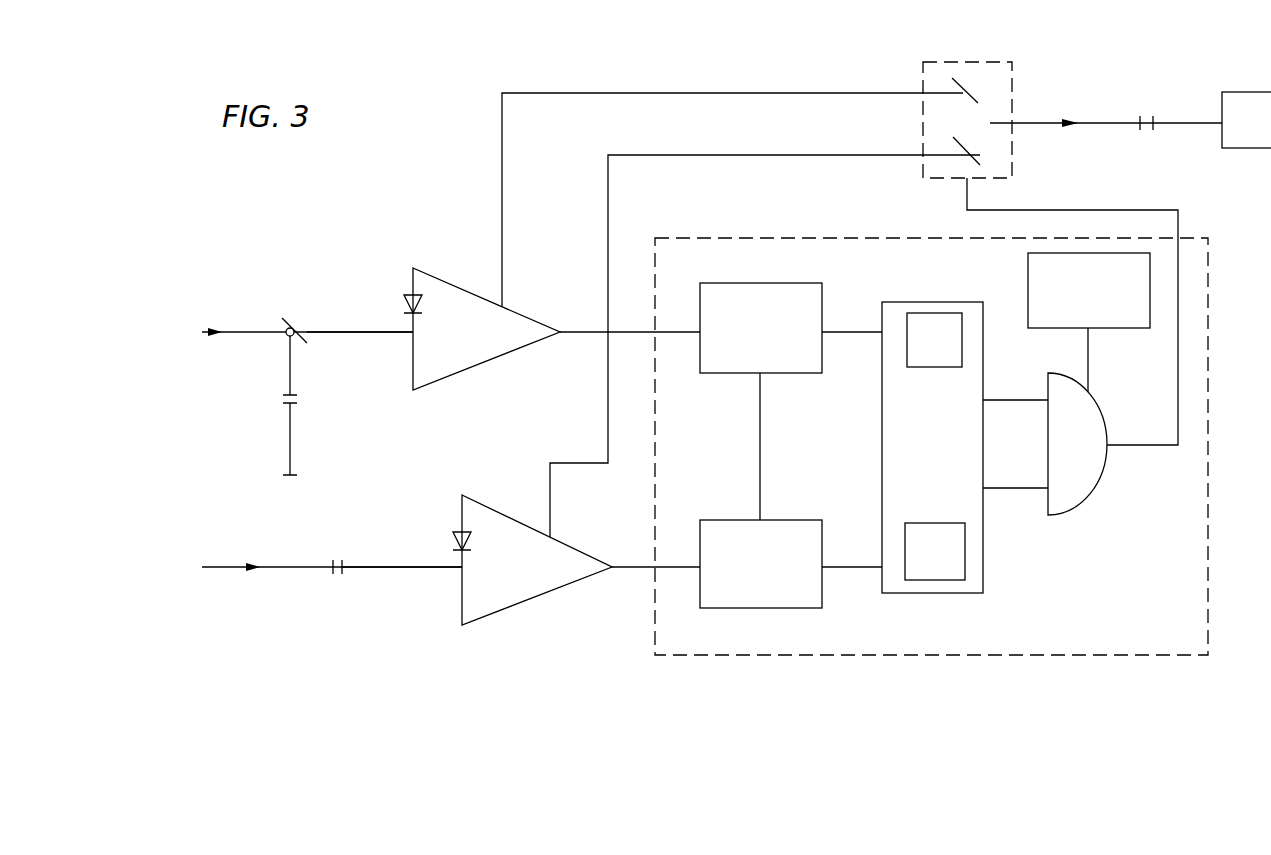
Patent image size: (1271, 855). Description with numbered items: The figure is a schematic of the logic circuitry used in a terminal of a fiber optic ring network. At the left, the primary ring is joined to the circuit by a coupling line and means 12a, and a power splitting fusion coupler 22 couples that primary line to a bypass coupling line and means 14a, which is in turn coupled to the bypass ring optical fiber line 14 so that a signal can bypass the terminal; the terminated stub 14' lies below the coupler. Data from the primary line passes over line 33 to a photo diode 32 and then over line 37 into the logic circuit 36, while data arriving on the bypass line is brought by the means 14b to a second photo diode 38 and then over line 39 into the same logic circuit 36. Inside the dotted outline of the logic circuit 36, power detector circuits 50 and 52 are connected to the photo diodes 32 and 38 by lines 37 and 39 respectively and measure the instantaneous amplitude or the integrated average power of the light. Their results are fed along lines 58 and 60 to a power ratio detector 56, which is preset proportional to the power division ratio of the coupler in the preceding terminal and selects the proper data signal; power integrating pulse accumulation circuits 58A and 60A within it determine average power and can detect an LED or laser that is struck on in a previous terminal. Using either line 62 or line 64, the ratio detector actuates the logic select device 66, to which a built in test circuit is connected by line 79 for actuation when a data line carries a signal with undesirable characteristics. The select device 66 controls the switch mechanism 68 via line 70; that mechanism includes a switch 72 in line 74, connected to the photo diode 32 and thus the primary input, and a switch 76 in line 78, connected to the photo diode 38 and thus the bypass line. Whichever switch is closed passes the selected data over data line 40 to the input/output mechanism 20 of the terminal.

The coupling line and means 12a is at (256, 332).
The bypass ring optical fiber line 14 is at (321, 554).
The bypass coupling line and means 14a is at (291, 378).
The terminated branch line 14' is at (313, 439).
The bypass input means 14b is at (417, 569).
The fusion coupler 22 is at (295, 322).
The primary data line 33 is at (340, 333).
The photo diode 32 is at (425, 262).
The photo diode output line 37 is at (578, 334).
The photo diode 38 is at (459, 488).
The photo diode output line 39 is at (632, 569).
The switch line 74 is at (721, 93).
The switch line 78 is at (777, 155).
The logic circuit 36 is at (659, 668).
The power detector circuit 50 is at (718, 378).
The power detector circuit 52 is at (801, 519).
The detector output line 58 is at (858, 332).
The power integrating pulse accumulation circuit 58A is at (933, 325).
The detector output line 60 is at (855, 567).
The power integrating pulse accumulation circuit 60A is at (943, 582).
The power ratio detector 56 is at (991, 581).
The ratio detector output line 62 is at (1019, 398).
The ratio detector output line 64 is at (1015, 490).
The logic select device 66 is at (1092, 455).
The built in test circuit line 79 is at (1089, 355).
The control line 70 is at (1178, 399).
The switch mechanism 68 is at (1014, 71).
The switch 72 is at (968, 94).
The switch 76 is at (980, 155).
The data line 40 is at (1050, 124).
The input/output mechanism 20 is at (1266, 130).